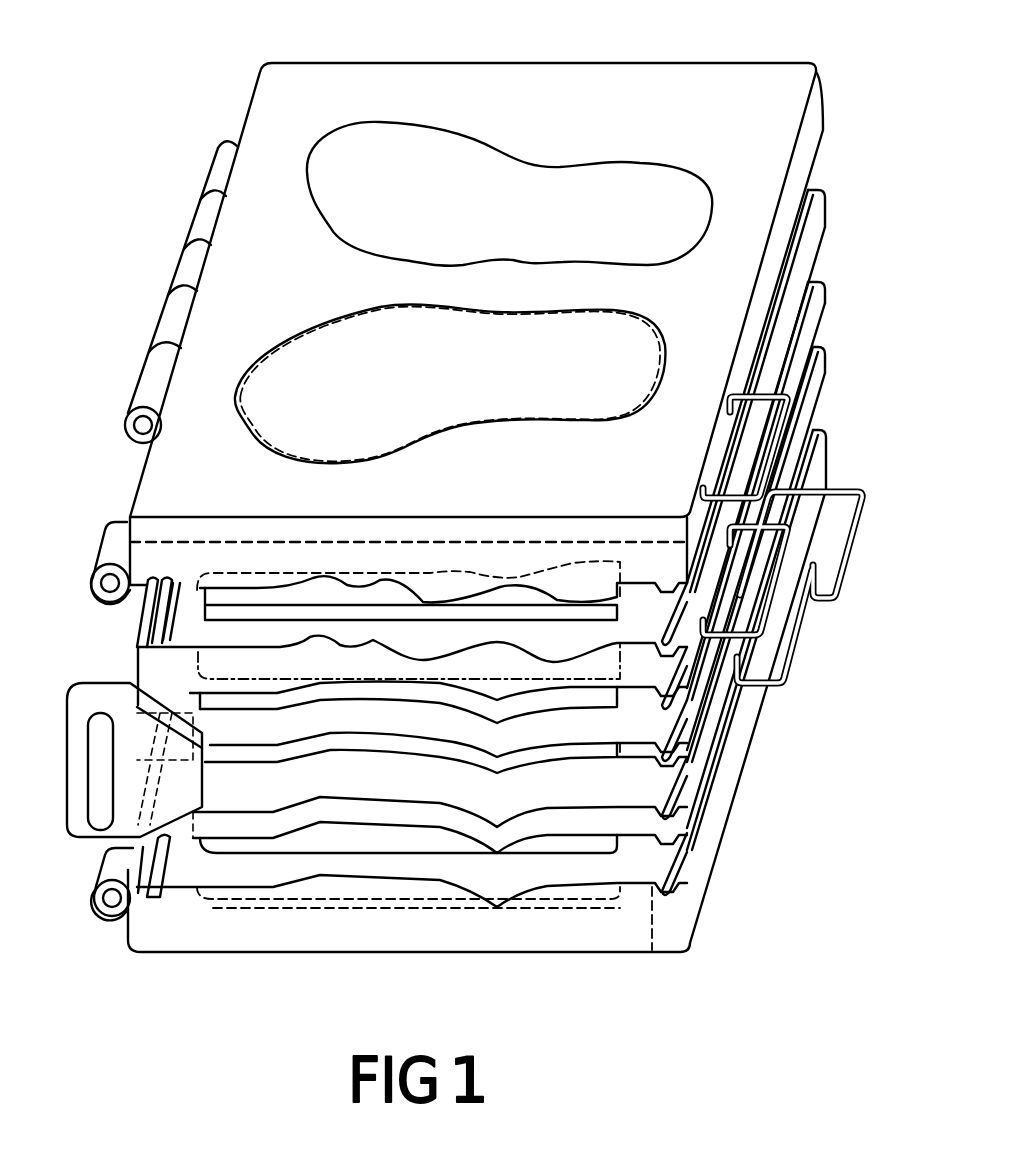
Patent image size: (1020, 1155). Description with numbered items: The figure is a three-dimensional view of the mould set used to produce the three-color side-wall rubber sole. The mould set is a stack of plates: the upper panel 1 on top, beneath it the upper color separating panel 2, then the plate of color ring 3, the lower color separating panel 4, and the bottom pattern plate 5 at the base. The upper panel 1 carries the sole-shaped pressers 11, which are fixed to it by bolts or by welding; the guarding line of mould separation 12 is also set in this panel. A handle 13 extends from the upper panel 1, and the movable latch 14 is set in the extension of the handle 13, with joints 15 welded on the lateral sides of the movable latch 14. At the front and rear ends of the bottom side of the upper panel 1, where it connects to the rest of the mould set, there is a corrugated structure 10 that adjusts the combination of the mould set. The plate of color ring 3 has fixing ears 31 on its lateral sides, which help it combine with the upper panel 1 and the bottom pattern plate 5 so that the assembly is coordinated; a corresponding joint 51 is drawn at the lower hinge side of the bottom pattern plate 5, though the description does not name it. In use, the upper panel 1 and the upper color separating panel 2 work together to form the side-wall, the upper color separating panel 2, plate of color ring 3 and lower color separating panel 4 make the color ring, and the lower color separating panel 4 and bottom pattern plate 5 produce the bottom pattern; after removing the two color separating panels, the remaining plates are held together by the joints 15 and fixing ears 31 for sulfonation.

The upper panel 1 is at (797, 92).
The upper color separating panel 2 is at (822, 227).
The plate of color ring 3 is at (820, 297).
The lower color separating panel 4 is at (822, 365).
The bottom pattern plate 5 is at (818, 477).
The corrugated structure 10 is at (162, 609).
The sole-shaped pressers 11 is at (408, 150).
The guarding line of mould separation 12 is at (185, 537).
The handle 13 is at (780, 427).
The movable latch 14 is at (172, 327).
The joints 15 is at (100, 580).
The fixing ears 31 is at (82, 765).
The lower hinge lug 51 is at (95, 908).